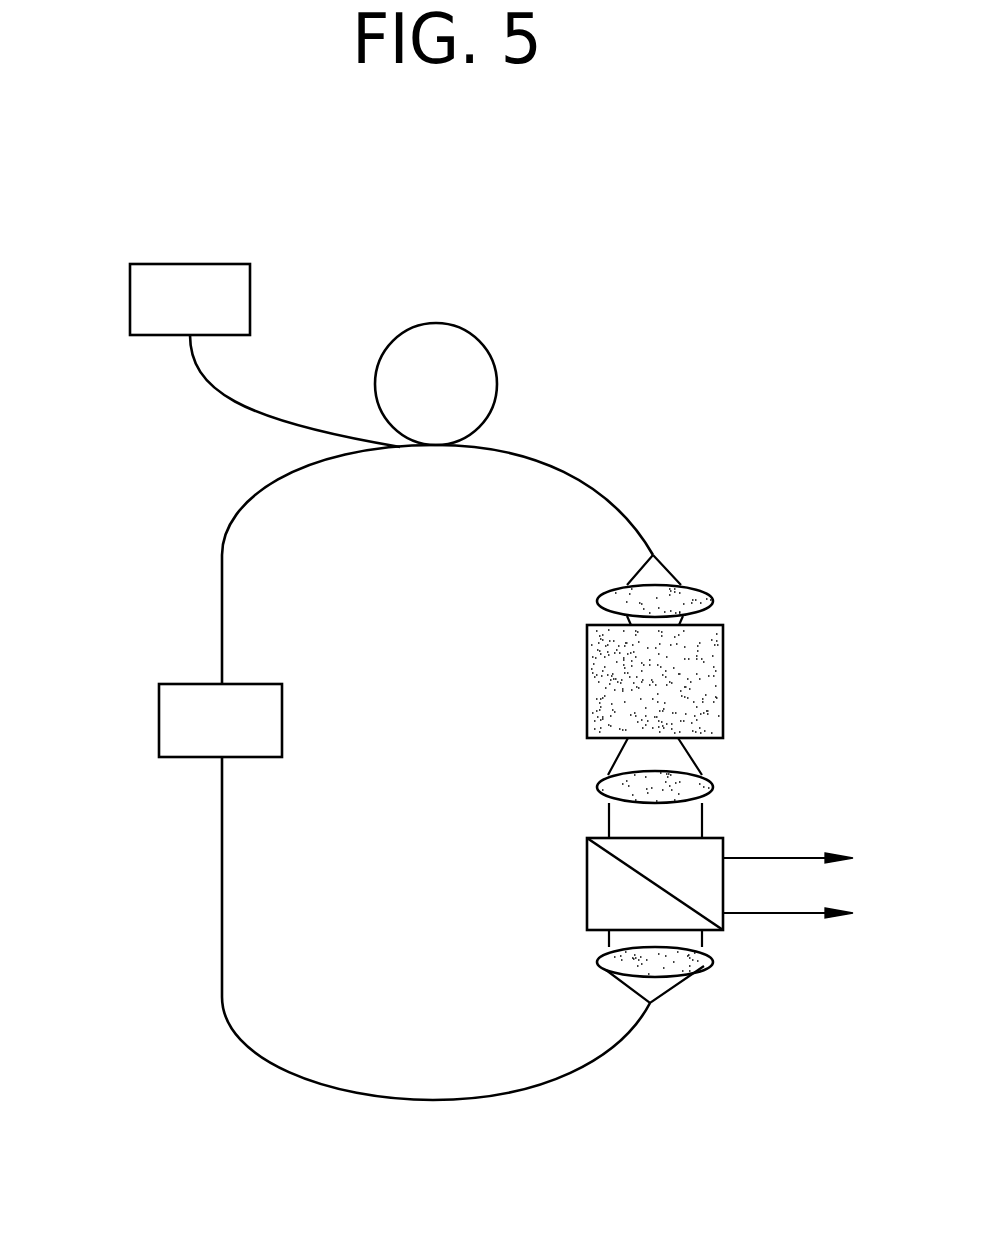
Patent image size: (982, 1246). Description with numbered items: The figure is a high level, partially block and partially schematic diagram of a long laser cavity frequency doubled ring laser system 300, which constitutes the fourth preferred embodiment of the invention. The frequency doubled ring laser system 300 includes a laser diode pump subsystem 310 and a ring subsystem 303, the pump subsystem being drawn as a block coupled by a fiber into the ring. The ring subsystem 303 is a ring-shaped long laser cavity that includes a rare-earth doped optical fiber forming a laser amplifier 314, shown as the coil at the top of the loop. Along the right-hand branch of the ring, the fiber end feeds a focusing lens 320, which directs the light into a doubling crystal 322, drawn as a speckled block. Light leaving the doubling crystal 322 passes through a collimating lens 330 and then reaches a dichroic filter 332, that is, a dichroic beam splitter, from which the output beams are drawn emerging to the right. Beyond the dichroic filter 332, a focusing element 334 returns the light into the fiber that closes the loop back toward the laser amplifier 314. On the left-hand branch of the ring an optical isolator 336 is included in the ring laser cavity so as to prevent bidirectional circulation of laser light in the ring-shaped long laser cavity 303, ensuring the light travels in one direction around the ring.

The frequency doubled ring laser system 300 is at (640, 467).
The ring subsystem 303 is at (438, 728).
The laser diode pump subsystem 310 is at (155, 317).
The laser amplifier 314 is at (475, 370).
The focusing lens 320 is at (720, 598).
The doubling crystal 322 is at (723, 665).
The collimating lens 330 is at (715, 787).
The dichroic filter 332 is at (587, 873).
The focusing element 334 is at (717, 967).
The optical isolator 336 is at (187, 716).